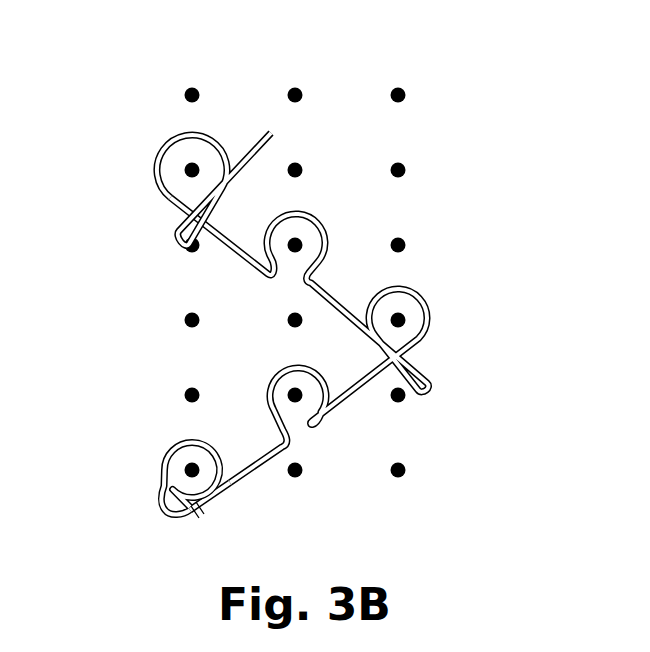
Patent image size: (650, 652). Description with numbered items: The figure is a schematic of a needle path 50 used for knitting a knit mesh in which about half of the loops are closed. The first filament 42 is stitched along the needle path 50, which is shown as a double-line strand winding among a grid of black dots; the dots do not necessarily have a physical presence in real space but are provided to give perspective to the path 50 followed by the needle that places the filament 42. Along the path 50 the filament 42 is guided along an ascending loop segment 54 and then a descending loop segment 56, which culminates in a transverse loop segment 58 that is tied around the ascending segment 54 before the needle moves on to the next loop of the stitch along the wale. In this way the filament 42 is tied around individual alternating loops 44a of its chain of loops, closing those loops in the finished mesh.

The needle path 50 is at (253, 281).
The first filament 42 is at (174, 322).
The alternating loops 44a is at (161, 468).
The ascending loop segment 54 is at (163, 469).
The descending loop segment 56 is at (222, 456).
The transverse loop segment 58 is at (206, 512).